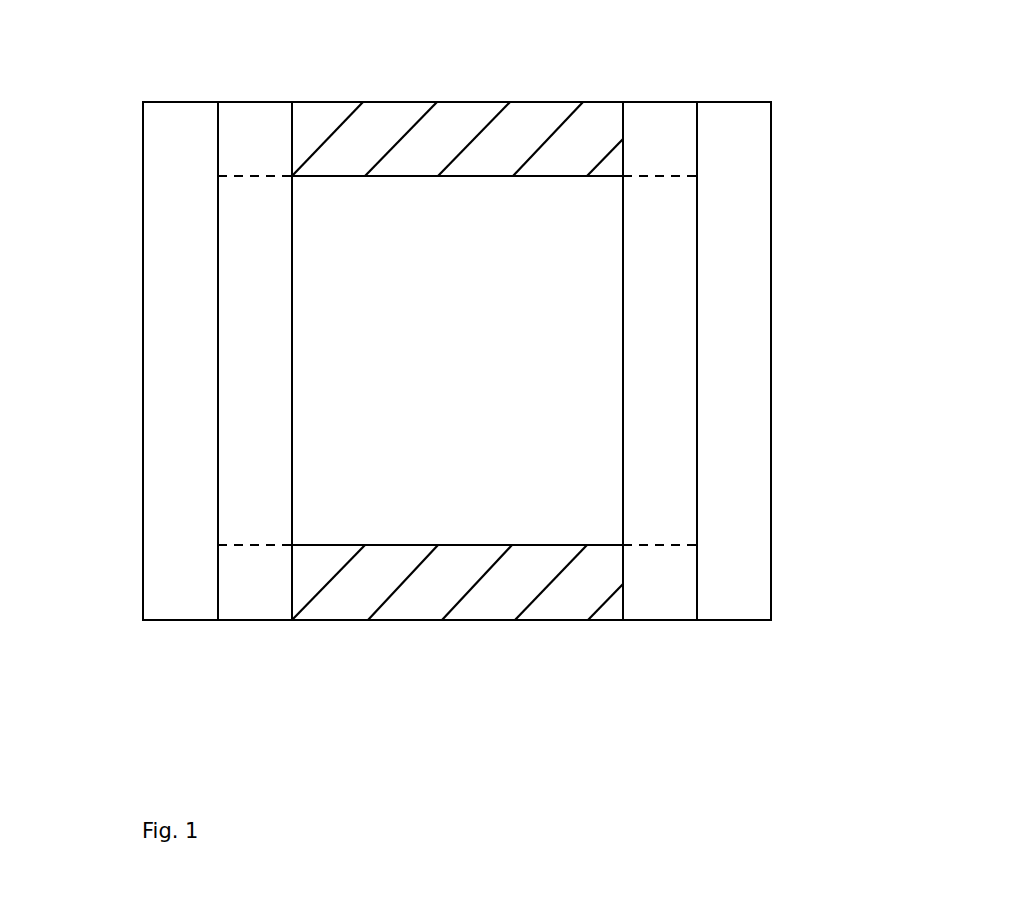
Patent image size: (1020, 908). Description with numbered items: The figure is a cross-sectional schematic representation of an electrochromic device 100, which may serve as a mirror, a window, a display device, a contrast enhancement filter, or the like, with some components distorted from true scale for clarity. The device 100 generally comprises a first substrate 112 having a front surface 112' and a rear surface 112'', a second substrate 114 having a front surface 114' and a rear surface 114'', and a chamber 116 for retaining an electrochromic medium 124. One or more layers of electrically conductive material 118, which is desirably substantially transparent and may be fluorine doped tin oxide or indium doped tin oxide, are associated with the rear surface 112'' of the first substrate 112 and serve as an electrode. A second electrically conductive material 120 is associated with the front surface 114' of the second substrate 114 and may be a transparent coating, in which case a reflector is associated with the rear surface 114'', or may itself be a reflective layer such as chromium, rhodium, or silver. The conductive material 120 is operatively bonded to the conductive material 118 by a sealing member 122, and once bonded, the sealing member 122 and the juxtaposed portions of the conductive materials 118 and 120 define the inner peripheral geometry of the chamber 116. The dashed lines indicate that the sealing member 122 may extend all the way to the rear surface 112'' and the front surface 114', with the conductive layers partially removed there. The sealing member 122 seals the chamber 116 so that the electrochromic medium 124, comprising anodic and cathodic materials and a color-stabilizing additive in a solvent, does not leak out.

The electrochromic device 100 is at (503, 58).
The first substrate 112 is at (725, 416).
The front surface of first substrate 112' is at (829, 520).
The rear surface of first substrate 112'' is at (793, 265).
The second substrate 114 is at (190, 416).
The front surface of second substrate 114' is at (125, 265).
The rear surface of second substrate 114'' is at (88, 520).
The chamber 116 is at (479, 380).
The electrically conductive material 118 is at (661, 510).
The electrically conductive material 120 is at (257, 510).
The sealing member 122 is at (328, 120).
The electrochromic medium 124 is at (514, 475).